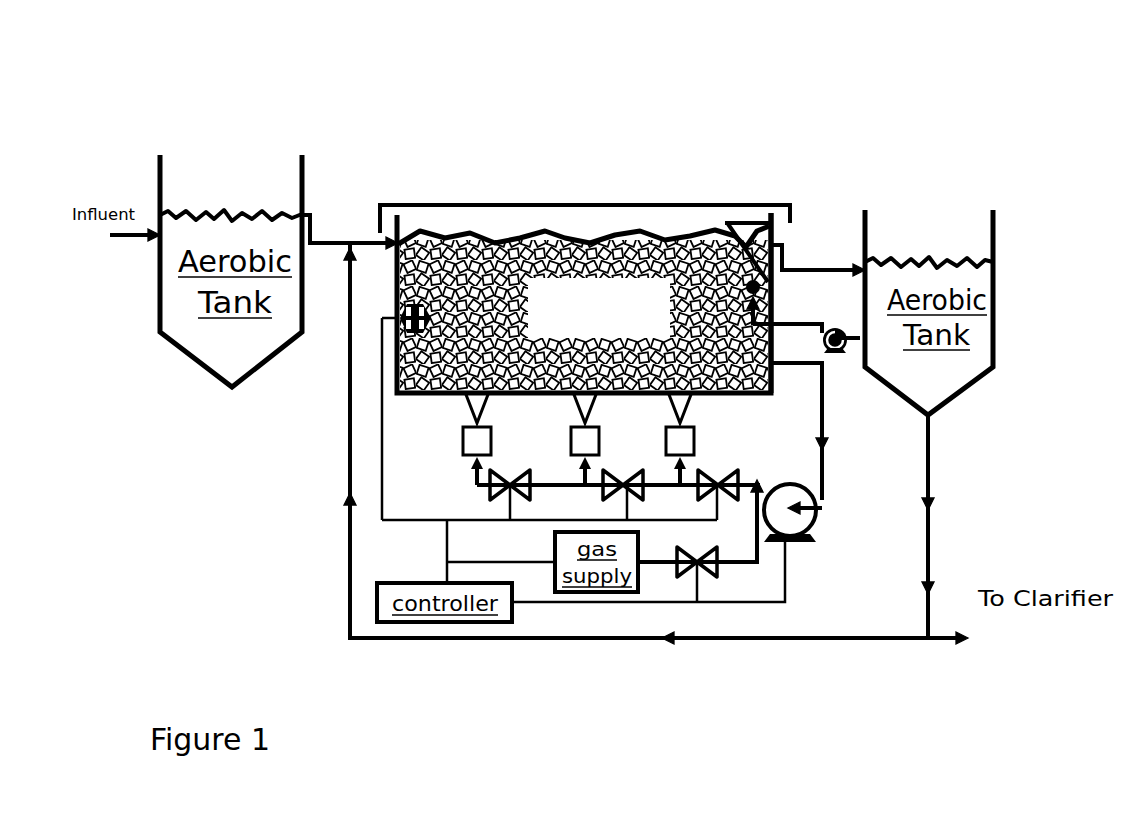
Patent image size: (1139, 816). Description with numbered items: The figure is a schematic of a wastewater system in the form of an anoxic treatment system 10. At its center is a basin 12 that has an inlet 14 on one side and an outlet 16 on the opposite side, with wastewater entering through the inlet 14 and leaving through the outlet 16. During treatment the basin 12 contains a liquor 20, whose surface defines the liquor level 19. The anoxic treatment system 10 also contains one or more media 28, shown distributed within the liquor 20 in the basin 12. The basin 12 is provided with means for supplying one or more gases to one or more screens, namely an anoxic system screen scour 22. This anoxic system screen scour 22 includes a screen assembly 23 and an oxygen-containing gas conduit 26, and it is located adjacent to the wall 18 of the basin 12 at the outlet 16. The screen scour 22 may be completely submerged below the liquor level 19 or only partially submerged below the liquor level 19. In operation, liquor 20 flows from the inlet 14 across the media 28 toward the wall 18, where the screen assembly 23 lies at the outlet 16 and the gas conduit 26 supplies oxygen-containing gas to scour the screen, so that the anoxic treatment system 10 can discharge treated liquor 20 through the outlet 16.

The anoxic treatment system 10 is at (498, 104).
The basin 12 is at (728, 397).
The inlet 14 is at (385, 241).
The outlet 16 is at (786, 241).
The wall 18 is at (770, 294).
The liquor level 19 is at (515, 233).
The liquor 20 is at (665, 304).
The anoxic system screen scour 22 is at (828, 88).
The screen assembly 23 is at (752, 184).
The oxygen-containing gas conduit 26 is at (777, 316).
The media 28 is at (584, 315).